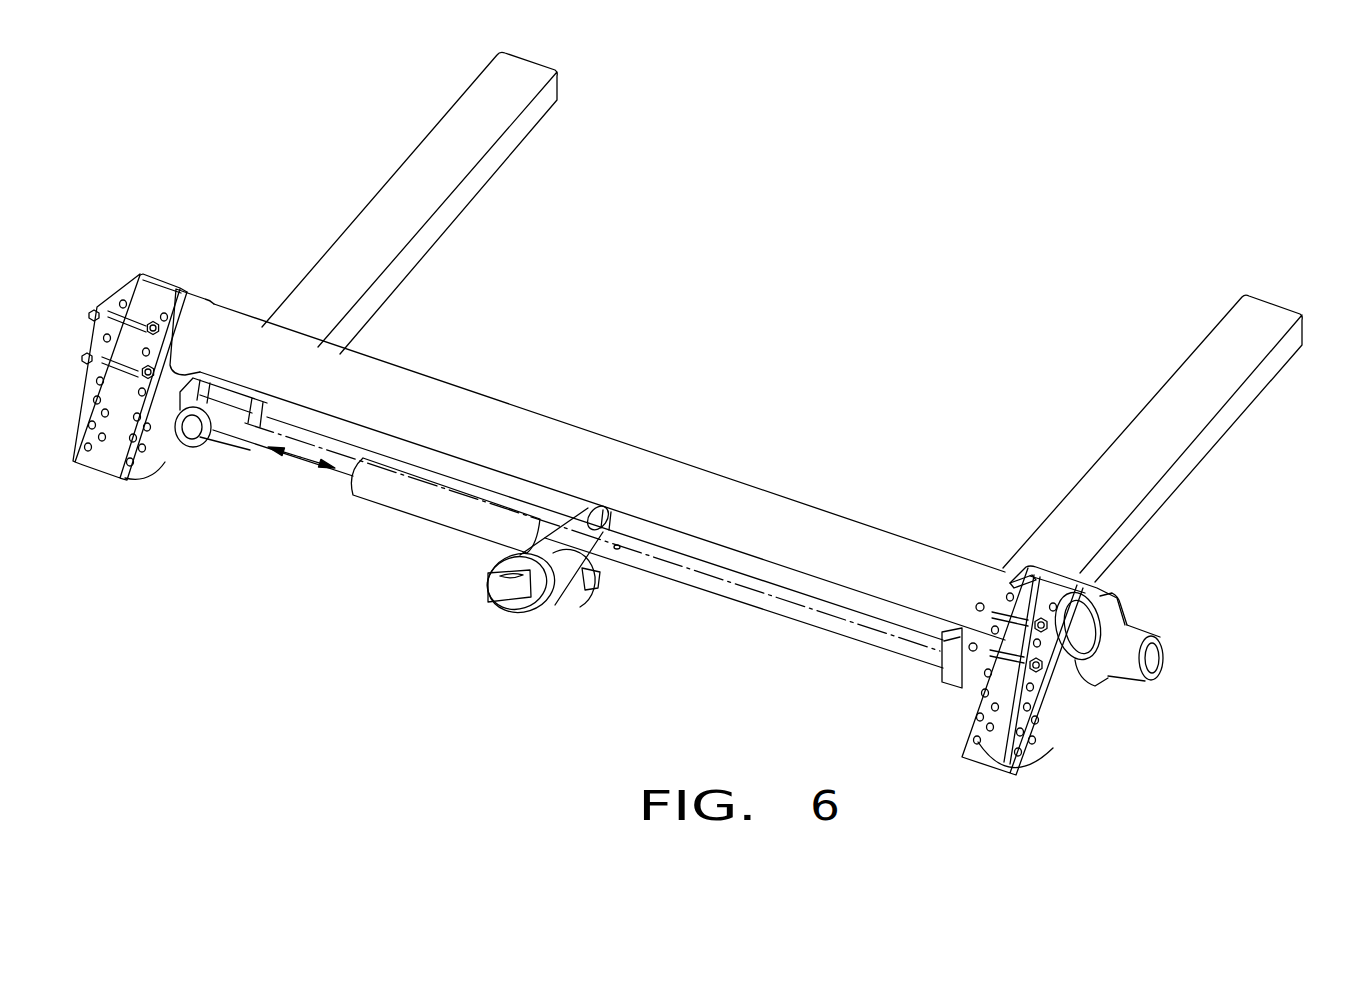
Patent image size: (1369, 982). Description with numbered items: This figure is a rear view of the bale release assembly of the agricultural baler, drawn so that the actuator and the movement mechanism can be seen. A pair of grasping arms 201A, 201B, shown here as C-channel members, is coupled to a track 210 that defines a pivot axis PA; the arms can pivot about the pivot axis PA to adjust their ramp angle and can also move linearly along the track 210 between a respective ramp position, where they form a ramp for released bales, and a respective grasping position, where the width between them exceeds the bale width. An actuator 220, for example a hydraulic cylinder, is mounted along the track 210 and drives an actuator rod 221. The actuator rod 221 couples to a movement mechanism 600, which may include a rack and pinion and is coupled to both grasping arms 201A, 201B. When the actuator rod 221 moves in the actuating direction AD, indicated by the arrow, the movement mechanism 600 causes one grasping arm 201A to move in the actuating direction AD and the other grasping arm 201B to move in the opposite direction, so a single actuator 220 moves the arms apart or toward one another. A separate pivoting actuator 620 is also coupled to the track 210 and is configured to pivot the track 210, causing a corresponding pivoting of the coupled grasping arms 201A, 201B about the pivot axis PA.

The grasping arm 201A is at (1222, 425).
The grasping arm 201B is at (423, 155).
The track 210 is at (290, 423).
The actuator 220 is at (424, 540).
The actuator rod 221 is at (290, 457).
The movement mechanism 600 is at (225, 429).
The pivoting actuator 620 is at (577, 620).
The pivot axis PA is at (757, 597).
The actuating direction AD is at (298, 455).